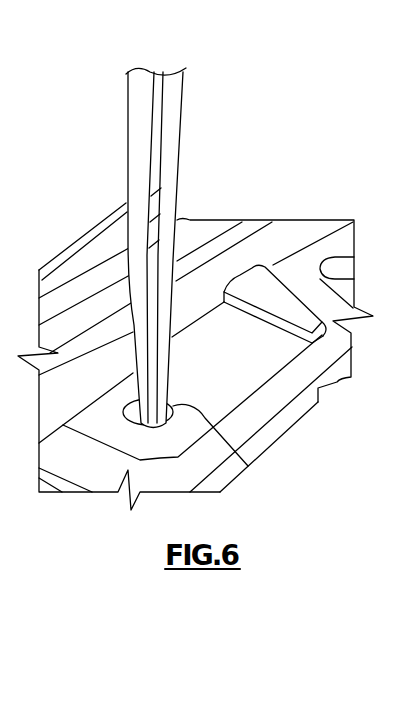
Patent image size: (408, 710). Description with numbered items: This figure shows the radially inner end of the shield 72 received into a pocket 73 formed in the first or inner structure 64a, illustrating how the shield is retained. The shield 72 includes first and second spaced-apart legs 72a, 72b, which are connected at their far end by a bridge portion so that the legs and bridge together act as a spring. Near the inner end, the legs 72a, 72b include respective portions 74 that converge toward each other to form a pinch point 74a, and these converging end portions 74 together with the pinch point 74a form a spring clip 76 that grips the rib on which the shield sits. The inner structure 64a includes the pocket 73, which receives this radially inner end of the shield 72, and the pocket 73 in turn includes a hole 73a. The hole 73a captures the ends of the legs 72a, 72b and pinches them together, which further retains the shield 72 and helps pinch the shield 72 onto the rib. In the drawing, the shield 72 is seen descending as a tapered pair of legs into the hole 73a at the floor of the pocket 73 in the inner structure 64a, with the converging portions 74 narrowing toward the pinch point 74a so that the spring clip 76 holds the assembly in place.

The shield 72 is at (157, 248).
The first leg 72a is at (181, 190).
The second leg 72b is at (132, 172).
The pocket 73 is at (276, 358).
The hole 73a is at (246, 461).
The converging end portions 74 is at (180, 324).
The pinch point 74a is at (166, 376).
The spring clip 76 is at (120, 381).
The first or inner structure 64a is at (290, 413).